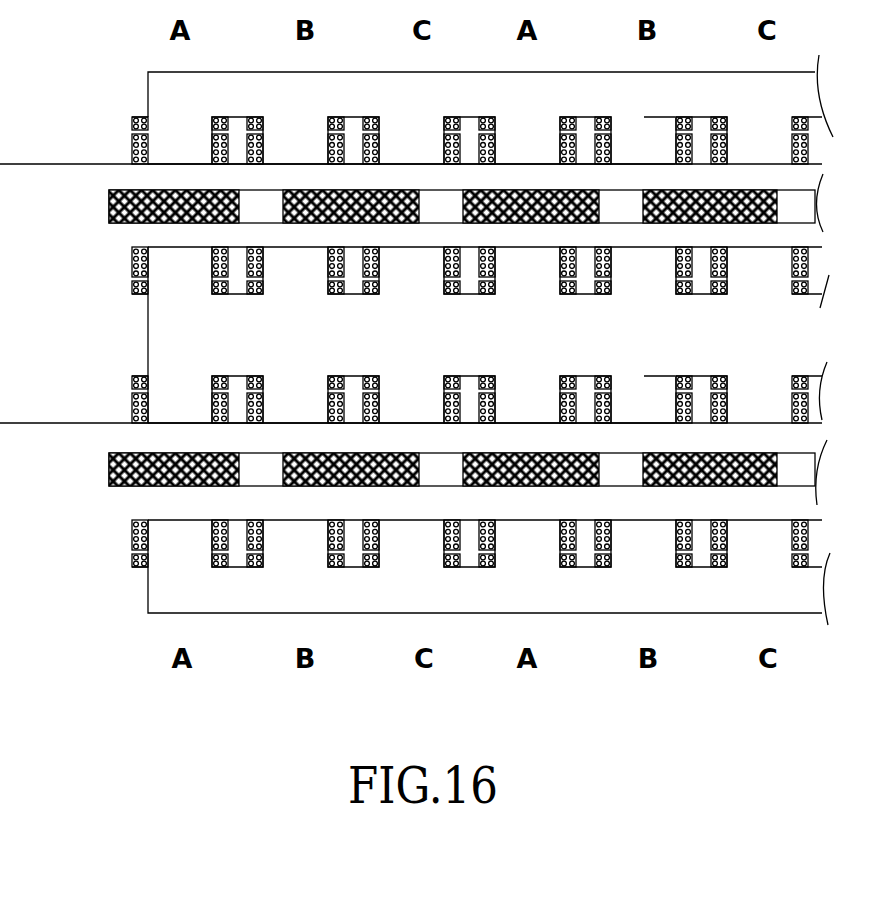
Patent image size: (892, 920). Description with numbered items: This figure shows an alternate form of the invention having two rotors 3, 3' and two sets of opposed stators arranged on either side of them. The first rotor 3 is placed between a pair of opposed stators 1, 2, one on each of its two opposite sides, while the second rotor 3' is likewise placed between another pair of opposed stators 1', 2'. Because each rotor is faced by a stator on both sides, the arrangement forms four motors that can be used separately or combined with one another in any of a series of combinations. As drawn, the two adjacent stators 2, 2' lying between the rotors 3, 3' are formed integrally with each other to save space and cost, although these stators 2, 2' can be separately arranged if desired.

The stator 1 is at (416, 109).
The stator 1' is at (436, 572).
The stator 2 is at (437, 335).
The stator 2' is at (413, 392).
The rotor 3 is at (433, 207).
The rotor 3' is at (433, 470).